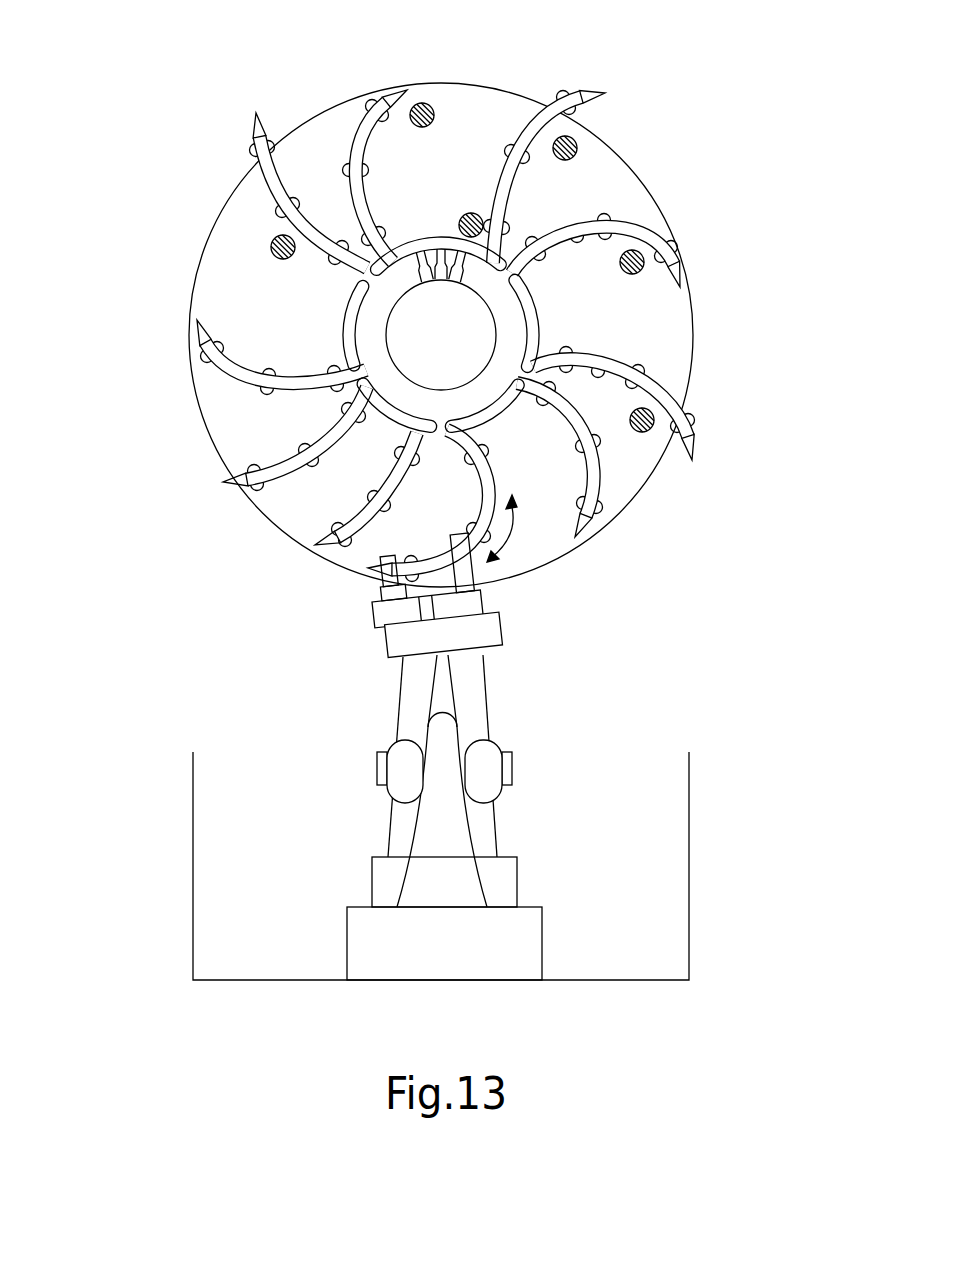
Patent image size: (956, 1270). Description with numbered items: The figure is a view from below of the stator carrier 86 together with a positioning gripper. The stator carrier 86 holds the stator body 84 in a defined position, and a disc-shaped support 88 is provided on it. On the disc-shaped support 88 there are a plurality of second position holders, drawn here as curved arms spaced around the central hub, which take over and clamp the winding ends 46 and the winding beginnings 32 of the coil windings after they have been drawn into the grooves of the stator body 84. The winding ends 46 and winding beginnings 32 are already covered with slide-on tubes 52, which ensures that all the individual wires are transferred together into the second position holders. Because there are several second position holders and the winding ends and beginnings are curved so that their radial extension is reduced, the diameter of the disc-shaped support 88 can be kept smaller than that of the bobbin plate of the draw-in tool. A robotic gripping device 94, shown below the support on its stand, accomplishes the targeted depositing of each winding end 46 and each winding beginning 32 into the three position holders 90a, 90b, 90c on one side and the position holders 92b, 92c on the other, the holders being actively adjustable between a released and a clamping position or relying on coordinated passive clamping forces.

The winding beginning 32 is at (684, 262).
The winding end 46 is at (695, 440).
The slide-on tube 52 is at (593, 217).
The stator body 84 is at (387, 308).
The stator carrier 86 is at (455, 308).
The disc-shaped support 88 is at (675, 335).
The second position holder 90a is at (471, 213).
The second position holder 90b is at (577, 238).
The second position holder 90c is at (644, 265).
The second position holder 92b is at (598, 372).
The second position holder 92c is at (650, 429).
The robotic gripping device 94 is at (497, 691).